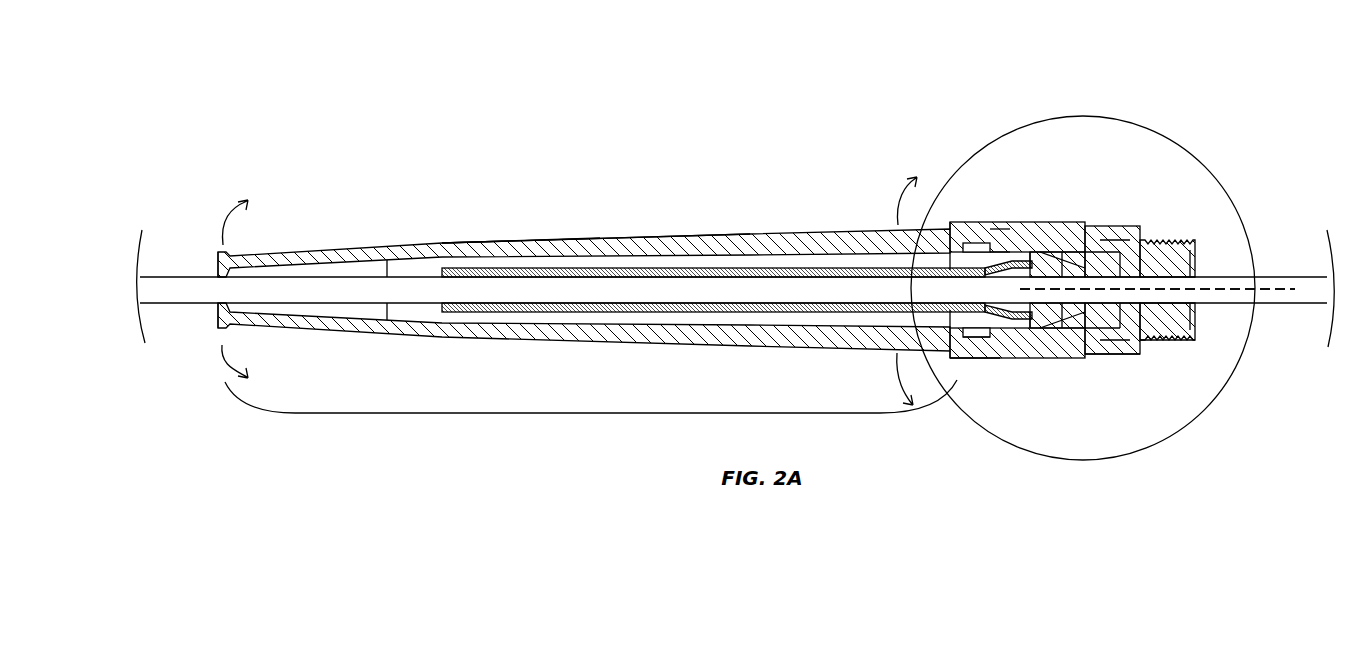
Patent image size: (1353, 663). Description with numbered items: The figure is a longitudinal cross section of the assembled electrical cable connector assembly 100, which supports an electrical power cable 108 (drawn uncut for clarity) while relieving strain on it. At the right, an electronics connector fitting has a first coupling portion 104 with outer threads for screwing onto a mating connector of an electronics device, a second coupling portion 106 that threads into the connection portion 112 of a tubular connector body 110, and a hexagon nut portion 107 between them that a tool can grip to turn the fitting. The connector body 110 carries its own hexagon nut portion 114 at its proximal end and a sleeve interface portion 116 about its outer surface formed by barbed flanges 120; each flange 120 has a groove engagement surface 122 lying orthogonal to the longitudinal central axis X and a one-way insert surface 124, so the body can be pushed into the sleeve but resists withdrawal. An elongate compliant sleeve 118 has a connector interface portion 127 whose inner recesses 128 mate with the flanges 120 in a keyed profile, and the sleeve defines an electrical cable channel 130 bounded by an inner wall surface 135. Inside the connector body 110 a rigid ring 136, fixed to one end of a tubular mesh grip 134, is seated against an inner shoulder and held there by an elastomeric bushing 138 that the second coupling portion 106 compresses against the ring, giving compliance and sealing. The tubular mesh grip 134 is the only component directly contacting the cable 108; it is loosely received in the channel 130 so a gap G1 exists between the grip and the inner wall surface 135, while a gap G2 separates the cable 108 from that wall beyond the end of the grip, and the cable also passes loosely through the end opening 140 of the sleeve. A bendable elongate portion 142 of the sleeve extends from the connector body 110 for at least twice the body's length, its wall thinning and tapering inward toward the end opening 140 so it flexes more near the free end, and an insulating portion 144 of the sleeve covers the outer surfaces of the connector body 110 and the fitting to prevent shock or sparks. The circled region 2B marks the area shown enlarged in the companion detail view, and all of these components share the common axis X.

The electrical cable connector assembly 100 is at (497, 74).
The first coupling portion 104 is at (1194, 250).
The second coupling portion 106 is at (1100, 357).
The hexagon nut portion 107 is at (1143, 343).
The electrical power cable 108 is at (316, 290).
The connector body 110 is at (1027, 240).
The connection portion 112 is at (1126, 237).
The hexagon nut portion 114 is at (1113, 240).
The sleeve interface portion 116 is at (997, 236).
The elongate compliant sleeve 118 is at (598, 237).
The flanges 120 is at (1000, 162).
The groove engagement surface 122 is at (966, 246).
The one-way insert surface 124 is at (920, 236).
The connector interface portion 127 is at (973, 350).
The recesses 128 is at (957, 380).
The electrical cable channel 130 is at (433, 262).
The tubular mesh grip 134 is at (857, 268).
The inner wall surface 135 is at (527, 250).
The rigid ring 136 is at (1033, 357).
The elastomeric bushing 138 is at (1067, 345).
The end opening 140 is at (218, 322).
The bendable elongate portion 142 is at (582, 415).
The insulating portion 144 is at (1097, 228).
The gap G1 is at (778, 320).
The gap G2 is at (415, 312).
The longitudinal central axis X is at (1272, 290).
The detail view region 2B is at (1157, 445).